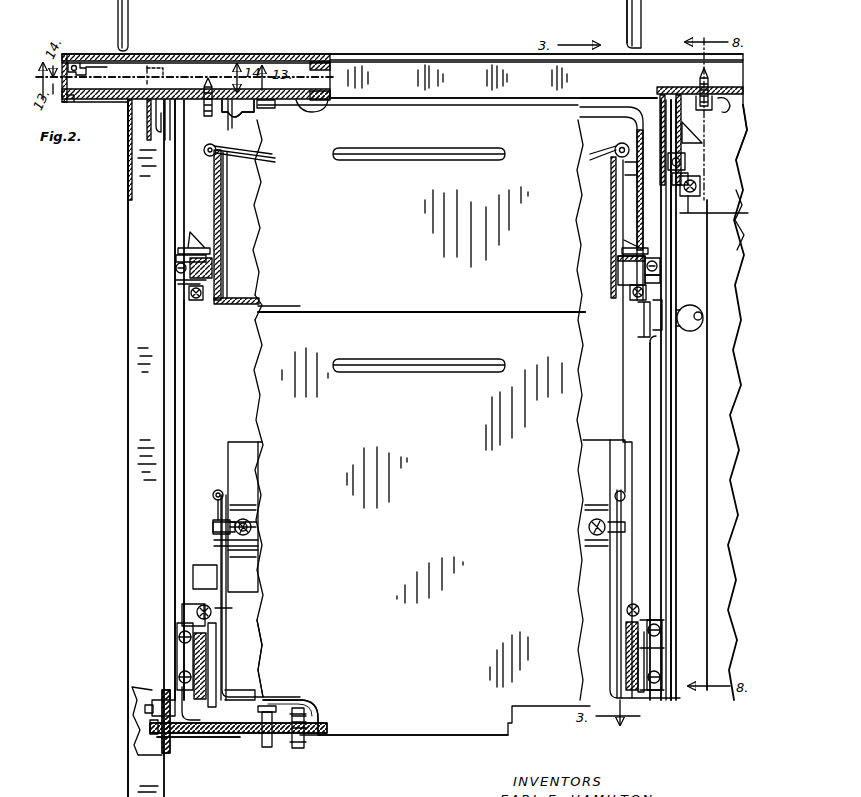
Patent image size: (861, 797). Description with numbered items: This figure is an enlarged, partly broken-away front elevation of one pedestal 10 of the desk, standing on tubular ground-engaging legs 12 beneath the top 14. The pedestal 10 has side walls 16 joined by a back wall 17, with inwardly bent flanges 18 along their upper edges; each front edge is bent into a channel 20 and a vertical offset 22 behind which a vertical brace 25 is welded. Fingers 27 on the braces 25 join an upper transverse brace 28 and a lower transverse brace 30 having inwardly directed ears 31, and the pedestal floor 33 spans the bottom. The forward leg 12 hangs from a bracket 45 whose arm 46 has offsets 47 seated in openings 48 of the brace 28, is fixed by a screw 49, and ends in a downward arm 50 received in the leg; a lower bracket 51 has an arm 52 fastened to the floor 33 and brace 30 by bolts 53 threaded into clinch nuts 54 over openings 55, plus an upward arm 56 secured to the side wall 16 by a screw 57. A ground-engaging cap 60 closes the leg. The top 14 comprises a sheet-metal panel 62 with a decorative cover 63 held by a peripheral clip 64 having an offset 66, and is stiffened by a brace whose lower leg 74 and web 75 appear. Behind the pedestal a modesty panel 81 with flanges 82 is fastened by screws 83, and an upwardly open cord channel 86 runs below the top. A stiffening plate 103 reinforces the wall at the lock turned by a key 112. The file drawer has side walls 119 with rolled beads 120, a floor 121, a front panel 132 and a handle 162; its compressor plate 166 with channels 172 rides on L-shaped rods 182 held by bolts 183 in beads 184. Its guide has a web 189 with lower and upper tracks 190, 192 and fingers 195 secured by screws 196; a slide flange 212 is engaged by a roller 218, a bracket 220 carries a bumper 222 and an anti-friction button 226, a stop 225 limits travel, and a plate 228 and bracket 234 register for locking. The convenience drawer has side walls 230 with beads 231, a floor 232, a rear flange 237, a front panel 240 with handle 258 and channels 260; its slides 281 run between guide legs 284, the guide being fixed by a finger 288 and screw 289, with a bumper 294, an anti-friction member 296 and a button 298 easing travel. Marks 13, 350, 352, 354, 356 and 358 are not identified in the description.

The pedestal 10 is at (126, 450).
The ground-engaging leg 12 is at (128, 18).
The section line 13 is at (179, 95).
The top 14 is at (433, 54).
The side wall 16 is at (660, 336).
The back wall 17 is at (204, 500).
The flange 18 is at (660, 87).
The channel 20 is at (666, 418).
The offset 22 is at (186, 388).
The brace 25 is at (180, 128).
The finger 27 is at (226, 712).
The brace 28 is at (612, 98).
The brace 30 is at (322, 714).
The ear 31 is at (640, 118).
The pedestal floor 33 is at (312, 738).
The bracket 45 is at (152, 122).
The arm 46 is at (306, 62).
The offset 47 is at (270, 108).
The opening 48 is at (250, 108).
The screw 49 is at (208, 156).
The arm 50 is at (166, 130).
The bracket 51 is at (208, 740).
The arm 52 is at (232, 738).
The bolt 53 is at (264, 746).
The clinch nut 54 is at (308, 720).
The opening 55 is at (292, 712).
The arm 56 is at (152, 702).
The screw 57 is at (145, 710).
The ground-engaging cap 60 is at (590, 0).
The panel 62 is at (209, 78).
The decorative cover 63 is at (272, 54).
The clip 64 is at (388, 62).
The offset 66 is at (78, 62).
The leg 74 is at (172, 88).
The web 75 is at (322, 72).
The modesty panel 81 is at (736, 518).
The flange 82 is at (674, 492).
The screw 83 is at (680, 540).
The cord channel 86 is at (736, 248).
The stiffening plate 103 is at (648, 340).
The key 112 is at (700, 328).
The side wall 119 is at (218, 546).
The bead 120 is at (216, 520).
The drawer floor 121 is at (262, 700).
The panel 132 is at (421, 394).
The drawer handle 162 is at (410, 372).
The compressor plate 166 is at (240, 490).
The channel 172 is at (248, 540).
The rod 182 is at (258, 524).
The bolt 183 is at (672, 179).
The bead 184 is at (216, 530).
The web 189 is at (252, 532).
The track 190 is at (160, 752).
The track 192 is at (196, 610).
The finger 195 is at (660, 622).
The screw 196 is at (180, 630).
The flange 212 is at (214, 666).
The roller 218 is at (634, 676).
The bracket 220 is at (196, 600).
The bumper 222 is at (210, 612).
The stop 225 is at (232, 612).
The anti-friction button 226 is at (210, 612).
The plate 228 is at (630, 560).
The side wall 230 is at (228, 245).
The bead 231 is at (216, 150).
The drawer floor 232 is at (258, 276).
The bracket 234 is at (626, 580).
The flange 237 is at (262, 318).
The panel 240 is at (421, 208).
The drawer handle 258 is at (388, 160).
The channel 260 is at (222, 190).
The slide 281 is at (212, 268).
The leg 284 is at (660, 195).
The finger 288 is at (176, 258).
The screw 289 is at (178, 272).
The bumper 294 is at (200, 302).
The anti-friction member 296 is at (190, 246).
The anti-friction button 298 is at (180, 282).
The screw 350 is at (720, 208).
The bracket 352 is at (712, 213).
The block 354 is at (690, 118).
The bump 356 is at (726, 110).
The screw 358 is at (698, 75).